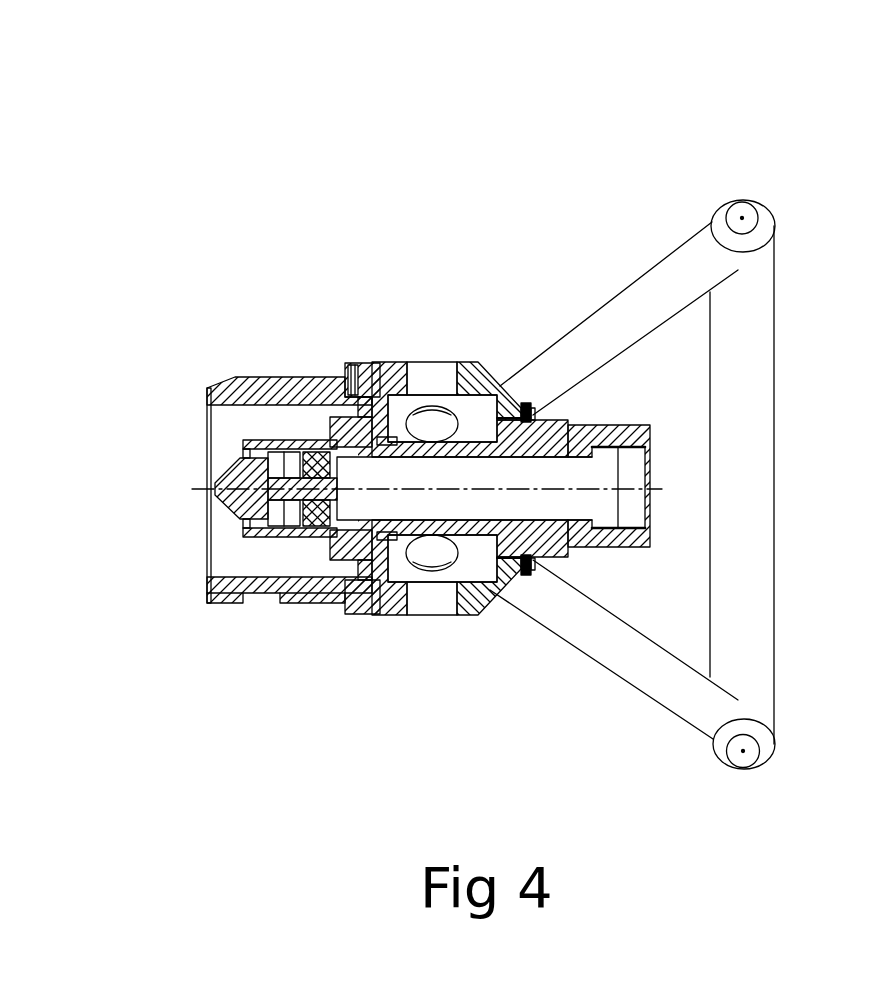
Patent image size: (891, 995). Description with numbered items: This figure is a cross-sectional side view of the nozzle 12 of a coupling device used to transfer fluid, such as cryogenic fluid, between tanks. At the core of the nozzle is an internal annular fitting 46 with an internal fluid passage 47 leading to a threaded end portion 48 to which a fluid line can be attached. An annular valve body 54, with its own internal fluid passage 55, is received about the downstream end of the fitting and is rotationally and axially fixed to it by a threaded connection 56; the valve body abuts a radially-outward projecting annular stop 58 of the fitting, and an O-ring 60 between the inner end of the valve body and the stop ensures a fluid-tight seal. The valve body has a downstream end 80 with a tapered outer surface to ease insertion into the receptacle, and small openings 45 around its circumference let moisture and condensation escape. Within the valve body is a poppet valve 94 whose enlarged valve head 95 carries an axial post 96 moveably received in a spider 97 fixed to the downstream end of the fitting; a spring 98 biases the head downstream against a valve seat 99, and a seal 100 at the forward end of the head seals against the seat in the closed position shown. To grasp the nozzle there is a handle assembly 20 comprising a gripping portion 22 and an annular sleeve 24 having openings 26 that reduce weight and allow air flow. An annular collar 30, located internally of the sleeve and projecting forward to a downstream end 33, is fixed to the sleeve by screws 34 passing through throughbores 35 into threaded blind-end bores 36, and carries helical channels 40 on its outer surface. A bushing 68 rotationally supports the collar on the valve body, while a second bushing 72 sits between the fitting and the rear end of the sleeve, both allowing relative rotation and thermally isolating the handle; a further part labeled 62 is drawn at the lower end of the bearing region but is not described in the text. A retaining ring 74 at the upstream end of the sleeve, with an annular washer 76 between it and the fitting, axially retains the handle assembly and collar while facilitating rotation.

The nozzle 12 is at (462, 272).
The handle assembly 20 is at (772, 190).
The gripping portion 22 is at (753, 422).
The annular sleeve 24 is at (481, 615).
The openings 26 is at (448, 330).
The annular collar 30 is at (278, 377).
The downstream end 33 is at (207, 392).
The screws 34 is at (376, 363).
The throughbores 35 is at (436, 375).
The threaded blind-end bores 36 is at (353, 363).
The helical channels 40 is at (262, 603).
The small openings 45 is at (320, 590).
The internal annular fitting 46 is at (602, 426).
The internal fluid passage 47 is at (523, 485).
The threaded end portion 48 is at (643, 458).
The annular valve body 54 is at (333, 393).
The internal fluid passage 55 is at (255, 540).
The threaded connection 56 is at (345, 462).
The annular stop 58 is at (385, 437).
The O-ring 60 is at (383, 440).
The lower end cap 62 is at (350, 616).
The bushing 68 is at (377, 596).
The second bushing 72 is at (515, 403).
The retaining ring 74 is at (535, 560).
The annular washer 76 is at (524, 566).
The downstream end 80 is at (207, 588).
The poppet valve 94 is at (188, 518).
The valve head 95 is at (228, 466).
The axial post 96 is at (277, 520).
The spider 97 is at (300, 540).
The spring 98 is at (293, 447).
The valve seat 99 is at (278, 440).
The seal 100 is at (232, 548).